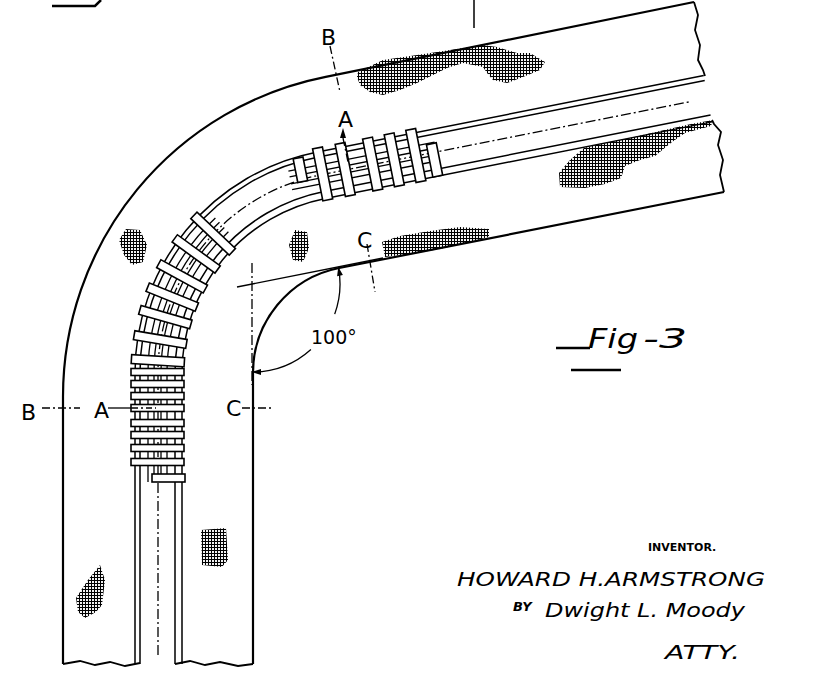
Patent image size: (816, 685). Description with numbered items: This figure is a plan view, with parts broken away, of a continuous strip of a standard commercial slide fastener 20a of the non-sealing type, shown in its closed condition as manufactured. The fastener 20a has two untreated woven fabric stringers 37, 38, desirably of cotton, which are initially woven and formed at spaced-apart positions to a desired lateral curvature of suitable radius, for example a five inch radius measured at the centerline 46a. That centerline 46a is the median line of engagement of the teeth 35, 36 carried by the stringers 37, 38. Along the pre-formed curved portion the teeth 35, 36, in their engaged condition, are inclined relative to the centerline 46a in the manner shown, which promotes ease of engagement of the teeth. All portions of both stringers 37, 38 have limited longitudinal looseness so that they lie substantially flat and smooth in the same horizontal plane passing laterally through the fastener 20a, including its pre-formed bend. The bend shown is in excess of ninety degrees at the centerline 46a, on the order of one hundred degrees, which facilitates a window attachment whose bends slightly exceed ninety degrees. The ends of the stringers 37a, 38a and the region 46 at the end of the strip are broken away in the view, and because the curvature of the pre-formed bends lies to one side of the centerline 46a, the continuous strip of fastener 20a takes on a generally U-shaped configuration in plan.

The standard commercial slide fastener 20a is at (464, 259).
The stringer 37 is at (172, 163).
The stringer 38 is at (255, 450).
The end of outer shell half 37a is at (705, 78).
The end of outer shell half 38a is at (712, 121).
The inner tube 46 is at (250, 204).
The centerline 46a is at (160, 606).
The teeth 35 is at (142, 337).
The teeth 36 is at (197, 326).